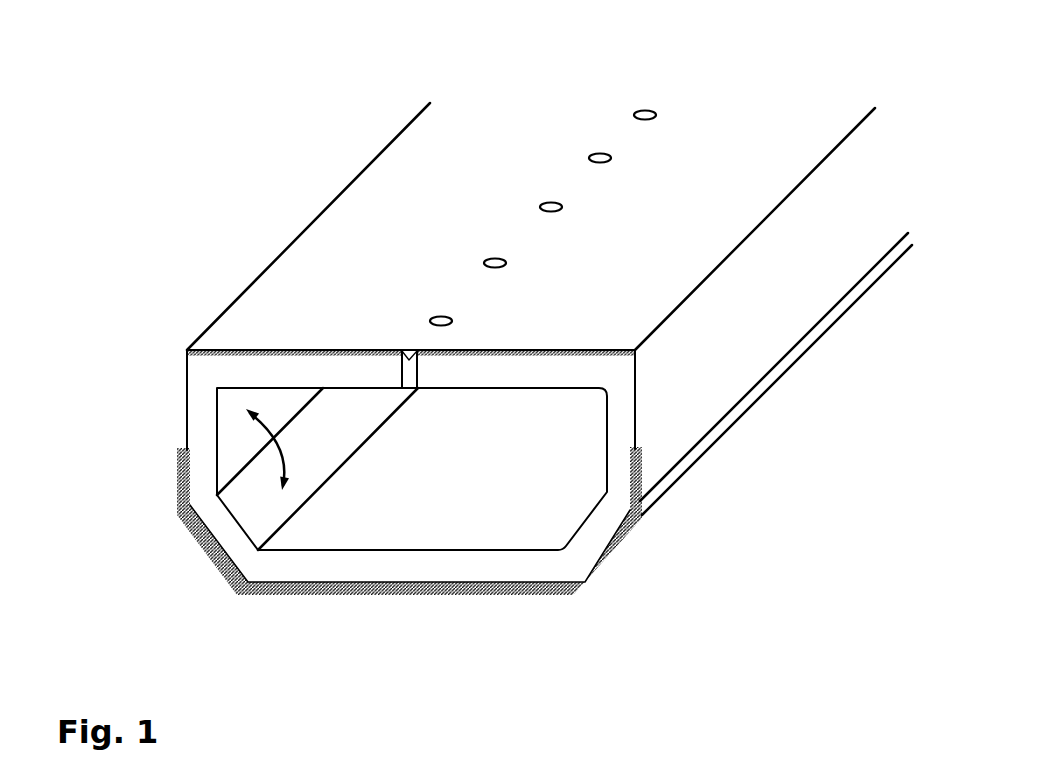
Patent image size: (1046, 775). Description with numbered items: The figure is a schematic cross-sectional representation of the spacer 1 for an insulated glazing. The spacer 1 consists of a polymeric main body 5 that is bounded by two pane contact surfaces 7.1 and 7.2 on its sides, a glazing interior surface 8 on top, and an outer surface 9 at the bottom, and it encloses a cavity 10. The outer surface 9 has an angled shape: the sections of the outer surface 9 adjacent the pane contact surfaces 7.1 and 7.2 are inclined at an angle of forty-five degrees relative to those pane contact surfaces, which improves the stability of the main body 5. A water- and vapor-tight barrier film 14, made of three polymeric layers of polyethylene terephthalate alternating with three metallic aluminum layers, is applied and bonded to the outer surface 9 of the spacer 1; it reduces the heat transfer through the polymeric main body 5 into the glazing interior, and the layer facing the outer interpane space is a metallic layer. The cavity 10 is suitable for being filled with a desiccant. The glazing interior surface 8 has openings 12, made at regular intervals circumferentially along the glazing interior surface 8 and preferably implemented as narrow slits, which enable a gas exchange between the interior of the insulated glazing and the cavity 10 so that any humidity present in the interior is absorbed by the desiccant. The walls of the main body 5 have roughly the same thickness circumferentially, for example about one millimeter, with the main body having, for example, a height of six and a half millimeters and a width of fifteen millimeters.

The spacer 1 is at (217, 234).
The polymeric main body 5 is at (218, 370).
The pane contact surface 7.1 is at (185, 430).
The pane contact surface 7.2 is at (697, 388).
The glazing interior surface 8 is at (320, 253).
The outer surface 9 is at (412, 582).
The cavity 10 is at (523, 523).
The openings 12 is at (634, 115).
The barrier film 14 is at (525, 588).